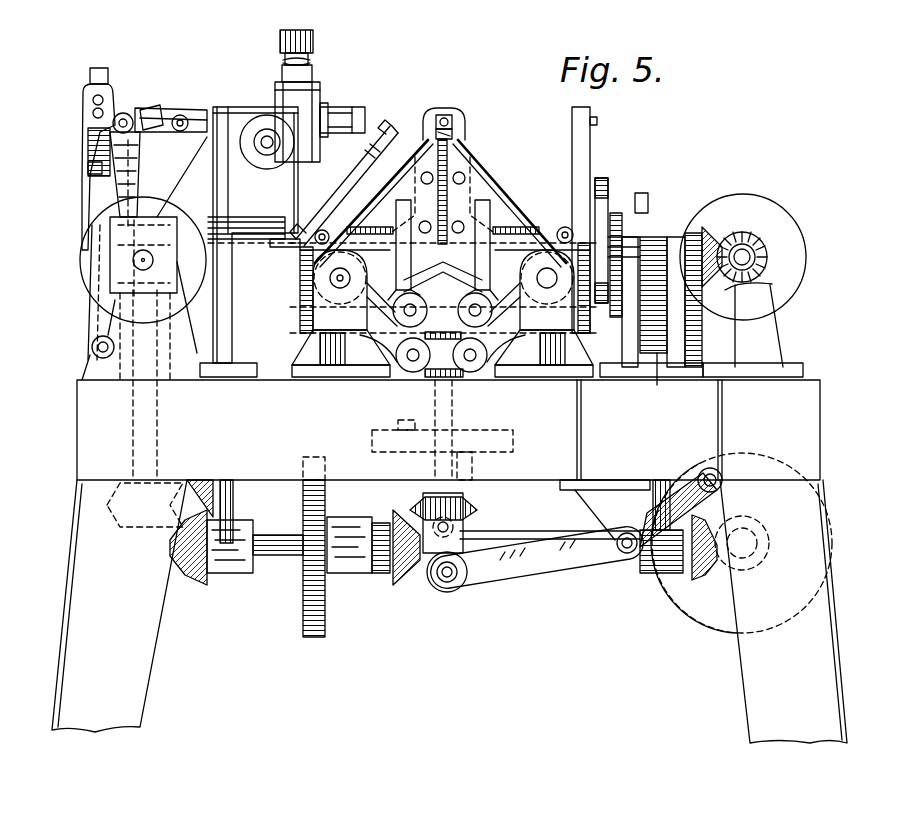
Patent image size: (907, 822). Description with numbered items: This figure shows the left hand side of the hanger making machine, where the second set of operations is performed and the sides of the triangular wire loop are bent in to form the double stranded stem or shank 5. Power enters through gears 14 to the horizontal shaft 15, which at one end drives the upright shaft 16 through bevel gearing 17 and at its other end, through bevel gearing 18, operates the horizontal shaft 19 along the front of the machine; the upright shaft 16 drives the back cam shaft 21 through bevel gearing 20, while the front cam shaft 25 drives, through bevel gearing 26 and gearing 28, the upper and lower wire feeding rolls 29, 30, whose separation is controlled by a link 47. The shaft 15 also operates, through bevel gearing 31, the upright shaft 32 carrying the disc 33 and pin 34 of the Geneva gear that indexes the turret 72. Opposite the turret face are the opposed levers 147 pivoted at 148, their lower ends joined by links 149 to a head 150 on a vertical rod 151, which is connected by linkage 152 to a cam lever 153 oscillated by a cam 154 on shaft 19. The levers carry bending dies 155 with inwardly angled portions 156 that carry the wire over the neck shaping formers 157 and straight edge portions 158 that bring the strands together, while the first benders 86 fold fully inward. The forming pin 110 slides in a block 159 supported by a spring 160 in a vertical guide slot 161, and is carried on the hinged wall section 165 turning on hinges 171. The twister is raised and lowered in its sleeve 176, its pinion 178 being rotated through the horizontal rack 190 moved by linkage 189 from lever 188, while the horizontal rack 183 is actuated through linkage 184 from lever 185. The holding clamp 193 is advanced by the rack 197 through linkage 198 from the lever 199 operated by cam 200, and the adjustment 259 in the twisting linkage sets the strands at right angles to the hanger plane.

The double stranded stem or shank 5 is at (298, 172).
The gears 14 is at (325, 605).
The horizontal shaft 15 is at (272, 556).
The upright shaft 16 is at (133, 428).
The bevel gearing 17 is at (176, 586).
The bevel gearing 18 is at (712, 580).
The horizontal shaft 19 is at (752, 550).
The bevel gearing 20 is at (82, 305).
The horizontal cam shaft 21 is at (150, 268).
The horizontal cam shaft 25 is at (748, 252).
The bevel gearing 26 is at (748, 288).
The gearing 28 is at (618, 212).
The wire feeding rolls 29 is at (658, 236).
The wire feeding rolls 30 is at (659, 378).
The bevel gearing 31 is at (405, 516).
The upright shaft 32 is at (472, 468).
The disc 33 is at (513, 441).
The pin 34 is at (398, 424).
The link 47 is at (605, 180).
The turret 72 is at (300, 329).
The benders 86 is at (373, 268).
The wire guiding and forming pin 110 is at (441, 108).
The levers 147 is at (368, 216).
The pivot 148 is at (563, 231).
The links 149 is at (393, 345).
The head 150 is at (457, 375).
The rod 151 is at (433, 398).
The linkage 152 is at (428, 575).
The cam lever 153 is at (535, 575).
The cam 154 is at (665, 590).
The bending dies 155 is at (486, 170).
The inwardly angled portions 156 is at (455, 222).
The neck shaping formers 157 is at (443, 262).
The straight edge portions 158 is at (447, 160).
The block 159 is at (452, 120).
The spring 160 is at (452, 134).
The vertical guide slot 161 is at (392, 133).
The hingedly mounted section 165 is at (360, 172).
The hinges 171 is at (322, 230).
The raising and lowering sleeve 176 is at (310, 62).
The pinion 178 is at (280, 40).
The horizontal rack 183 is at (200, 112).
The linkage 184 is at (150, 134).
The lever 185 is at (131, 160).
The lever 188 is at (82, 195).
The linkage 189 is at (148, 107).
The horizontal rack 190 is at (356, 107).
The holding clamp 193 is at (284, 247).
The rack 197 is at (250, 222).
The linkage 198 is at (128, 192).
The lever 199 is at (88, 237).
The cam 200 is at (82, 262).
The adjustment 259 is at (85, 132).